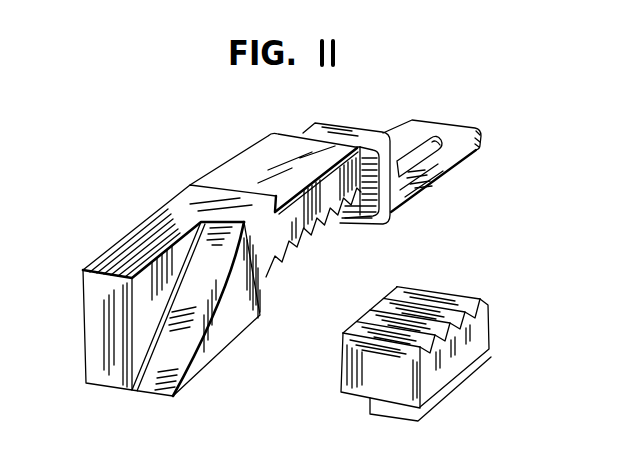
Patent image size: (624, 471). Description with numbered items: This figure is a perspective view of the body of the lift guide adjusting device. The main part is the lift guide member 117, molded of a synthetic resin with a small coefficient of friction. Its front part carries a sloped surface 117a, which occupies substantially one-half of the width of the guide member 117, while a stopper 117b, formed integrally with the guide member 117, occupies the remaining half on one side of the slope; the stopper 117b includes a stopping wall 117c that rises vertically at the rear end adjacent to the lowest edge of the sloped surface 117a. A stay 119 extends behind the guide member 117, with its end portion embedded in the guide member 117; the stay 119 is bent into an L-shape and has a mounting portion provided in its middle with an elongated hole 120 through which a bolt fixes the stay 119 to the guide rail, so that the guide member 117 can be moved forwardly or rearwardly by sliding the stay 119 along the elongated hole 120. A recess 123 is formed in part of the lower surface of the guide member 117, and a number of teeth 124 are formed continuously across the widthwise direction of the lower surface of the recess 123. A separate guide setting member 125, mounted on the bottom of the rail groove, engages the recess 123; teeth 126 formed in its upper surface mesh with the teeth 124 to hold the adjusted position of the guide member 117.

The lift guide member 117 is at (286, 151).
The sloped surface 117a is at (215, 247).
The stopper 117b is at (142, 247).
The stopping wall 117c is at (105, 320).
The stay 119 is at (441, 160).
The elongated hole 120 is at (424, 150).
The recess 123 is at (262, 286).
The teeth 124 is at (318, 230).
The guide setting member 125 is at (478, 357).
The teeth 126 is at (447, 303).